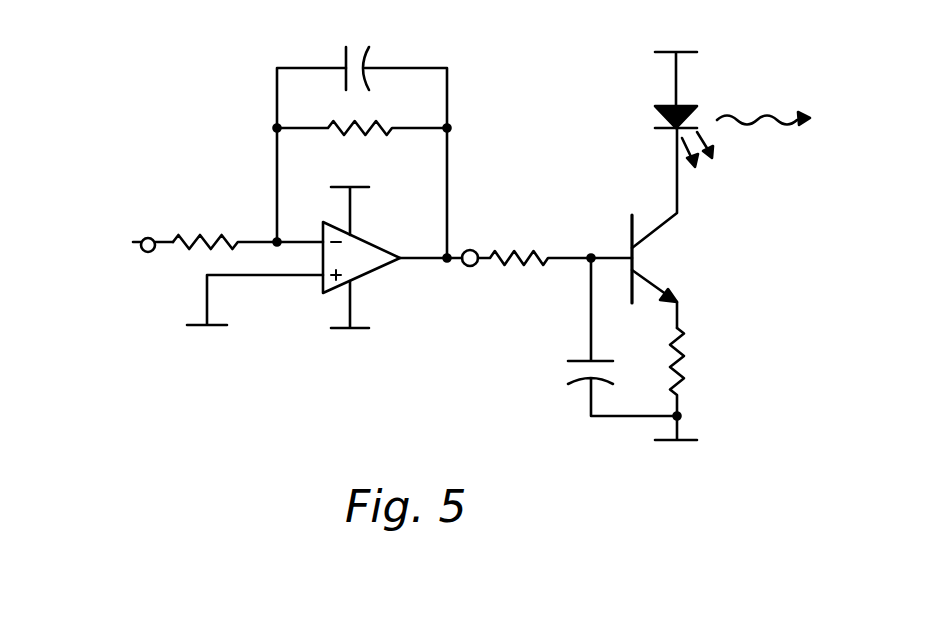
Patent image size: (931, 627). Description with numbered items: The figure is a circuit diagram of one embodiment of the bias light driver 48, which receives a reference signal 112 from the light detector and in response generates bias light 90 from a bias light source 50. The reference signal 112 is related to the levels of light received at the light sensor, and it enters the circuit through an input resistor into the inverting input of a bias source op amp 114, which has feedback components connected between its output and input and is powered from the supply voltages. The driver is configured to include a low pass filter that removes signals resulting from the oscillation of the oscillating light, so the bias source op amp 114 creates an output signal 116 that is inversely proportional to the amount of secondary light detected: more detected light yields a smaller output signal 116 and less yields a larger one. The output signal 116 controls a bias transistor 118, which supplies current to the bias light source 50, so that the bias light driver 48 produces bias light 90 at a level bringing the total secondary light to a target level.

The bias light driver 48 is at (235, 387).
The bias light source 50 is at (688, 103).
The bias light 90 is at (757, 121).
The reference signal 112 is at (150, 238).
The bias source op amp 114 is at (367, 277).
The output signal 116 is at (465, 265).
The bias transistor 118 is at (628, 225).